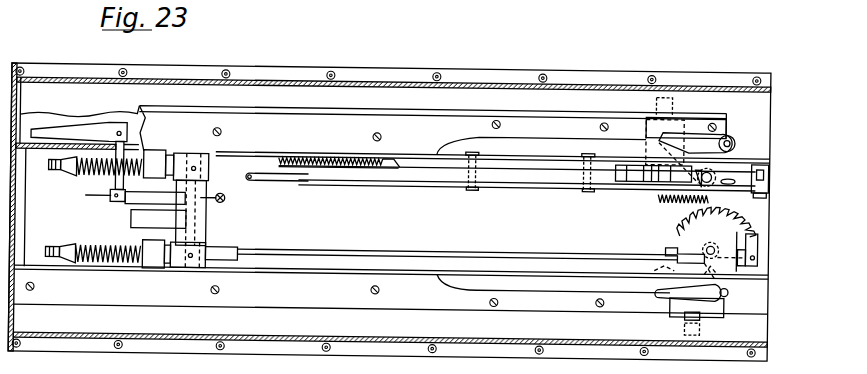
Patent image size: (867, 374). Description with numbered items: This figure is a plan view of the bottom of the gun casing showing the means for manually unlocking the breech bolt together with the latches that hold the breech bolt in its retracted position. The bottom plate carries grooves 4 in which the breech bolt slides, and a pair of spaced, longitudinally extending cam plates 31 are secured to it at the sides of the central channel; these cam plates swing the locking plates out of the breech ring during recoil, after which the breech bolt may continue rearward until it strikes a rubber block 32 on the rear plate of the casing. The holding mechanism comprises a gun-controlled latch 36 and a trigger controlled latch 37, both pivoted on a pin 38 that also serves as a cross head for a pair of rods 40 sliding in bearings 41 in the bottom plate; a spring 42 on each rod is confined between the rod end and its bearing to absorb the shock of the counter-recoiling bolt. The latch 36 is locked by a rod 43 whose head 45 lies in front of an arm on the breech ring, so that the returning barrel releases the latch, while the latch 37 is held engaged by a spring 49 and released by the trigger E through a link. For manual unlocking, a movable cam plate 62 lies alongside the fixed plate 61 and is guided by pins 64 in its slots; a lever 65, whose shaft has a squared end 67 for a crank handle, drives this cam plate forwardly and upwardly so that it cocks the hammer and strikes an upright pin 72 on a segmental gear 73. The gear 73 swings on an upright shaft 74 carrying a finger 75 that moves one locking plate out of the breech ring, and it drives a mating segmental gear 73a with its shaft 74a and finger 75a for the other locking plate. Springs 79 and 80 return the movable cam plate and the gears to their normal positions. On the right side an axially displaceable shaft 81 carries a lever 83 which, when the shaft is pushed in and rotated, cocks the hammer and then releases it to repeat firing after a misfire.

The trigger E is at (70, 128).
The grooves 4 is at (248, 151).
The cam plates 31 is at (554, 216).
The rubber block 32 is at (22, 206).
The gun-controlled latch 36 is at (143, 217).
The trigger controlled latch 37 is at (157, 198).
The pin 38 is at (195, 219).
The rods 40 is at (55, 245).
The bearings 41 is at (157, 149).
The spring 42 is at (105, 171).
The rod 43 is at (253, 246).
The head 45 is at (756, 233).
The spring 49 is at (228, 196).
The fixed plate 61 is at (527, 179).
The movable cam plate 62 is at (483, 173).
The pins 64 is at (470, 186).
The lever 65 is at (643, 165).
The squared end 67 is at (656, 98).
The upright pin 72 is at (731, 169).
The segmental gear 73 is at (707, 190).
The mating segmental gear 73a is at (700, 253).
The upright shaft 74 is at (734, 132).
The shaft 74a is at (735, 286).
The finger 75 is at (690, 128).
The finger 75a is at (693, 291).
The spring 79 is at (335, 165).
The spring 80 is at (668, 196).
The axially displaceable shaft 81 is at (706, 320).
The lever 83 is at (682, 245).